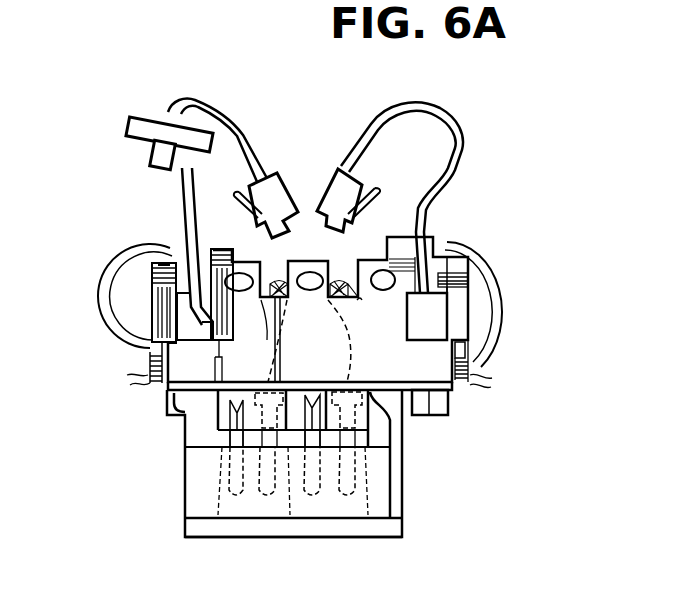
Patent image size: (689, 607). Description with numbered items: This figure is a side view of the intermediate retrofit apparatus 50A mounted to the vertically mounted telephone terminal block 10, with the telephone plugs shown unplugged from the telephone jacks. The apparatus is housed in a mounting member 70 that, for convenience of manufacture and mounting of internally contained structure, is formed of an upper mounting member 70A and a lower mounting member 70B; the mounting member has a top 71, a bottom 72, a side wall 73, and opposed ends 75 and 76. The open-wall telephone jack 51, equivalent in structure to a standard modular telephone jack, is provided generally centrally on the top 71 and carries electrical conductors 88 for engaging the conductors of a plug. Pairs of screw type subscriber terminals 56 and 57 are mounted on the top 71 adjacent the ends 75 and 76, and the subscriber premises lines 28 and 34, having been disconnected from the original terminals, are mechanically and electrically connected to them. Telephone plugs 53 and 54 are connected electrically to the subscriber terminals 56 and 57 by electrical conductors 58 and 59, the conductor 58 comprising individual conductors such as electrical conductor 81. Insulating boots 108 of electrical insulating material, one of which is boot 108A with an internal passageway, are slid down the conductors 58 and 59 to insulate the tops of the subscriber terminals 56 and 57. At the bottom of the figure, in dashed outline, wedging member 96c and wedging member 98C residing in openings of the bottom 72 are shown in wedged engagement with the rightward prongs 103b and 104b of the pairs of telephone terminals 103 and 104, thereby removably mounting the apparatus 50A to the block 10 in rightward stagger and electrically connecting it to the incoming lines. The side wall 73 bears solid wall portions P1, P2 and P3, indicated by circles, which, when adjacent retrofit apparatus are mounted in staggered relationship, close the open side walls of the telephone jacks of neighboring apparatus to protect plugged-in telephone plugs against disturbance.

The telephone terminal block 10 is at (413, 483).
The subscriber premises line 28 is at (126, 290).
The subscriber premises line 34 is at (494, 292).
The intermediate retrofit apparatus 50A is at (153, 192).
The telephone jack 51 is at (272, 253).
The telephone plug 53 is at (271, 175).
The telephone plug 54 is at (340, 165).
The subscriber terminals 56 is at (165, 262).
The subscriber terminals 57 is at (404, 258).
The electrical conductor 58 is at (218, 100).
The electrical conductor 59 is at (441, 116).
The mounting member 70 is at (183, 362).
The upper mounting member 70A is at (480, 318).
The lower mounting member 70B is at (468, 402).
The top 71 is at (292, 262).
The bottom 72 is at (430, 416).
The side wall 73 is at (326, 373).
The end 75 is at (150, 322).
The end 76 is at (499, 340).
The electrical conductor 81 is at (245, 315).
The electrical conductors 88 is at (350, 311).
The wedging member 96c is at (257, 403).
The wedging member 98C is at (362, 401).
The pair of telephone terminals 103 is at (253, 528).
The prong 103b is at (266, 465).
The pair of telephone terminals 104 is at (330, 528).
The prong 104b is at (357, 470).
The insulating boot 108 is at (128, 122).
The boot 108A is at (434, 606).
The solid wall portion P1 is at (251, 296).
The solid wall portion P2 is at (298, 294).
The solid wall portion P3 is at (378, 298).